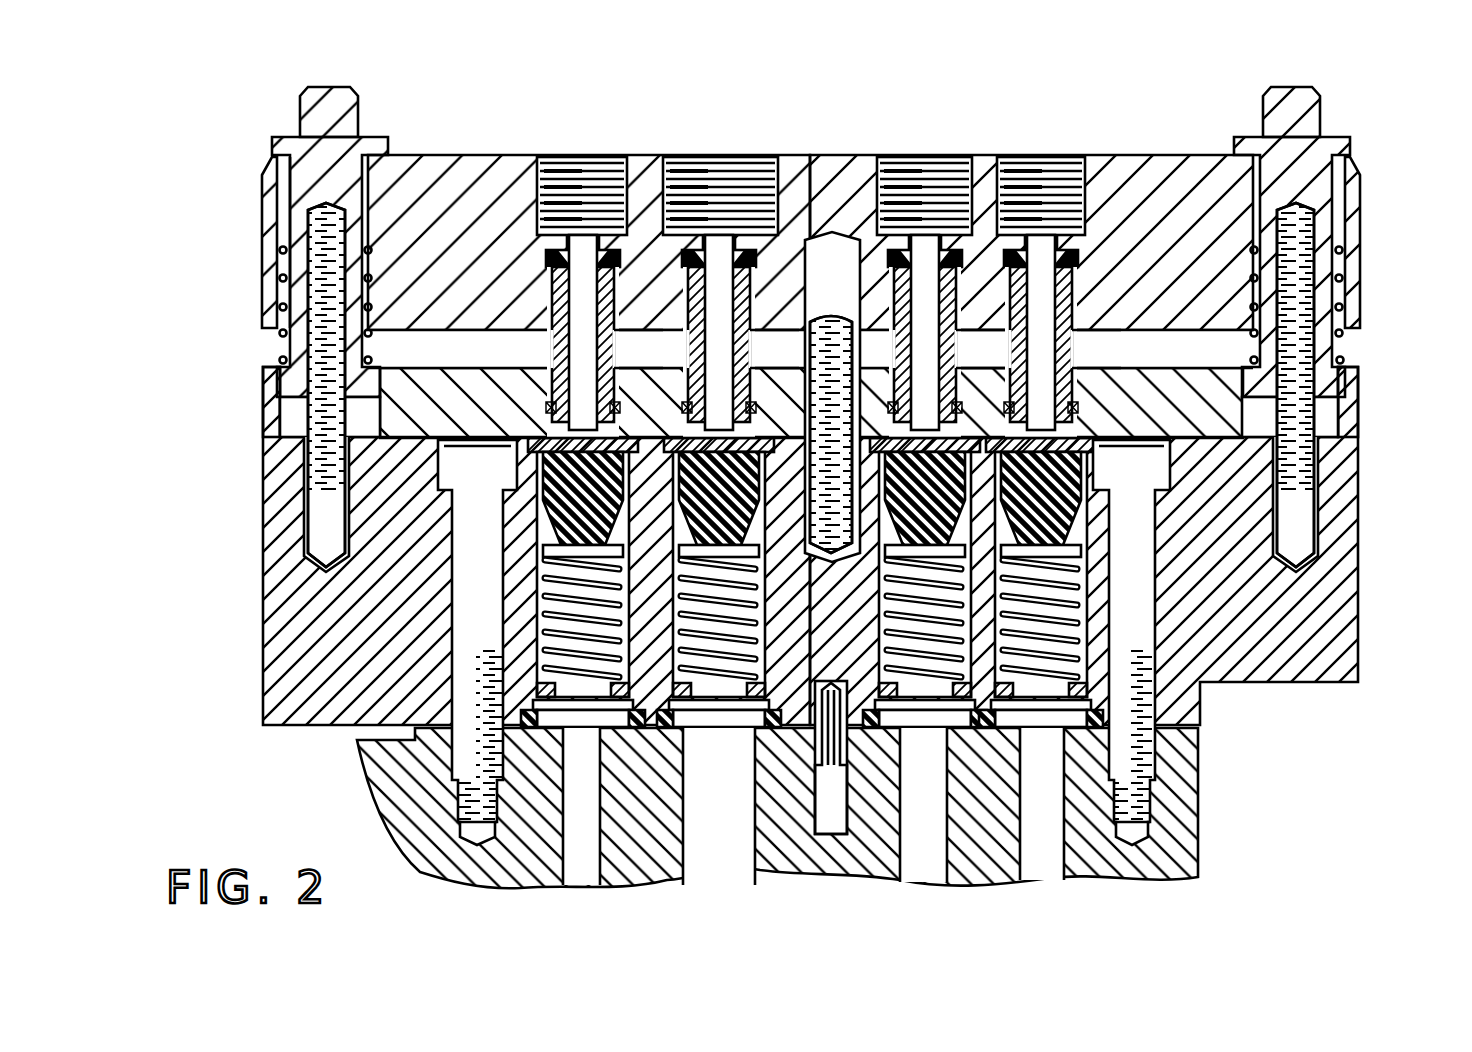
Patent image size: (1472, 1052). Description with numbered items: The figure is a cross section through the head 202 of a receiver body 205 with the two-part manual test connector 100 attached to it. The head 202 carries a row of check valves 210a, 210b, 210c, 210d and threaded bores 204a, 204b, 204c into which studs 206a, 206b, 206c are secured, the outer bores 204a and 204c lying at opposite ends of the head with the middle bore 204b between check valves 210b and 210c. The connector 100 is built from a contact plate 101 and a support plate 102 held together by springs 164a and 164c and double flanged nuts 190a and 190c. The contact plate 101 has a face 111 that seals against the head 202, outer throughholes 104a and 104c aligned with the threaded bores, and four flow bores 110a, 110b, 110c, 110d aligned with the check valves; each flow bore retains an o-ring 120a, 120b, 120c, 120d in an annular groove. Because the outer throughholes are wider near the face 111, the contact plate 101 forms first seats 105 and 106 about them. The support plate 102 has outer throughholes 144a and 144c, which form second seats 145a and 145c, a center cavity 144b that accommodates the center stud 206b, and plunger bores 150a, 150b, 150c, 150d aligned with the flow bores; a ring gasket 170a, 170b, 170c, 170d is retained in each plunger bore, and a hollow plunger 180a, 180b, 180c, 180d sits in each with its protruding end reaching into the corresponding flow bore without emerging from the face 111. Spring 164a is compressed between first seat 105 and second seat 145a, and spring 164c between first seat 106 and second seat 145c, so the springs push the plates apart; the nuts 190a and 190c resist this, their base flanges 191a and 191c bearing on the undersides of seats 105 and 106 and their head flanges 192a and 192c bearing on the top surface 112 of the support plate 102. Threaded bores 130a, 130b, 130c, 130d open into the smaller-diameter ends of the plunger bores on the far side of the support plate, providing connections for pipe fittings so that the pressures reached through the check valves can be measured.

The two-part manual test connector 100 is at (1364, 87).
The contact plate 101 is at (268, 383).
The support plate 102 is at (268, 310).
The outer throughhole 104a is at (368, 400).
The outer throughhole 104c is at (1252, 385).
The first seat 105 is at (282, 362).
The first seat 106 is at (1345, 365).
The flow bore 110a is at (558, 445).
The flow bore 110b is at (700, 445).
The flow bore 110c is at (965, 445).
The flow bore 110d is at (1090, 445).
The face 111 is at (1215, 500).
The top surface 112 is at (1185, 155).
The o-ring 120a is at (548, 405).
The o-ring 120b is at (685, 405).
The o-ring 120c is at (962, 408).
The o-ring 120d is at (1075, 408).
The threaded bore 130a is at (596, 165).
The threaded bore 130b is at (700, 165).
The threaded bore 130c is at (945, 165).
The threaded bore 130d is at (1040, 165).
The outer throughhole 144a is at (282, 305).
The center stud accommodating cavity 144b is at (828, 330).
The outer throughhole 144c is at (1342, 305).
The second seat 145a is at (282, 248).
The second seat 145c is at (1342, 248).
The plunger bore 150a is at (558, 287).
The plunger bore 150b is at (700, 285).
The plunger bore 150c is at (906, 290).
The plunger bore 150d is at (1062, 290).
The spring 164a is at (282, 277).
The spring 164c is at (1342, 277).
The ring gasket 170a is at (552, 258).
The ring gasket 170b is at (690, 262).
The ring gasket 170c is at (912, 262).
The ring gasket 170d is at (1070, 262).
The plunger 180a is at (556, 345).
The plunger 180b is at (685, 350).
The plunger 180c is at (962, 350).
The plunger 180d is at (1070, 345).
The double flanged nut 190a is at (300, 182).
The double flanged nut 190c is at (1318, 182).
The base flange 191a is at (290, 418).
The base flange 191c is at (1335, 398).
The head flange 192a is at (270, 160).
The head flange 192c is at (1350, 158).
The head 202 is at (1328, 440).
The threaded bore 204a is at (320, 505).
The threaded bore 204b is at (830, 450).
The threaded bore 204c is at (1302, 505).
The receiver body 205 is at (1330, 640).
The stud 206a is at (302, 478).
The center stud 206b is at (836, 255).
The stud 206c is at (1316, 472).
The check valve 210a is at (545, 575).
The check valve 210b is at (735, 540).
The check valve 210c is at (905, 560).
The check valve 210d is at (1045, 600).